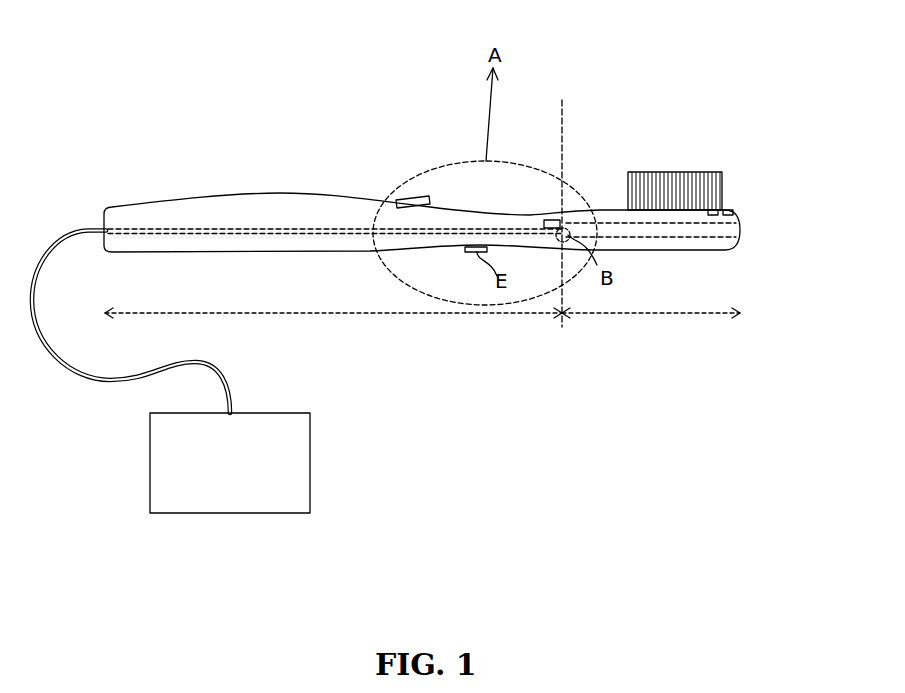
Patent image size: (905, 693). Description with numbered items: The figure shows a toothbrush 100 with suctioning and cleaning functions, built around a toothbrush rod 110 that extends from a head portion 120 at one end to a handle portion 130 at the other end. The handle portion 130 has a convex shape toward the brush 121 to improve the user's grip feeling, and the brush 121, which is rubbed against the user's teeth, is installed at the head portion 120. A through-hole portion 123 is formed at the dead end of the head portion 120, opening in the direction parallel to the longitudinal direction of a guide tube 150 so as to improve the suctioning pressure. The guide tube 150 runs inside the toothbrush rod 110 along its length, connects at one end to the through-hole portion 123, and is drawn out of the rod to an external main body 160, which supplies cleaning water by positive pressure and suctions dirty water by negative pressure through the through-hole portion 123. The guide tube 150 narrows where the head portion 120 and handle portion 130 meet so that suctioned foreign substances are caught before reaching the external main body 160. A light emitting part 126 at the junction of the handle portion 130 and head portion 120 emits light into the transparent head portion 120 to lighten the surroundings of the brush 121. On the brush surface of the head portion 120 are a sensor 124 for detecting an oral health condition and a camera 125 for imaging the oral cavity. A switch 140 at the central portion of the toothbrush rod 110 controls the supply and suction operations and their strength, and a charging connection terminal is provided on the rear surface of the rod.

The toothbrush with suctioning and cleaning functions 100 is at (807, 37).
The toothbrush rod 110 is at (199, 169).
The head portion 120 is at (651, 325).
The brush 121 is at (676, 172).
The through-hole portion 123 is at (740, 230).
The sensor 124 is at (714, 210).
The camera 125 is at (732, 210).
The light emitting part 126 is at (552, 220).
The handle portion 130 is at (333, 325).
The switch 140 is at (413, 197).
The guide tube 150 is at (485, 228).
The external main body 160 is at (310, 462).